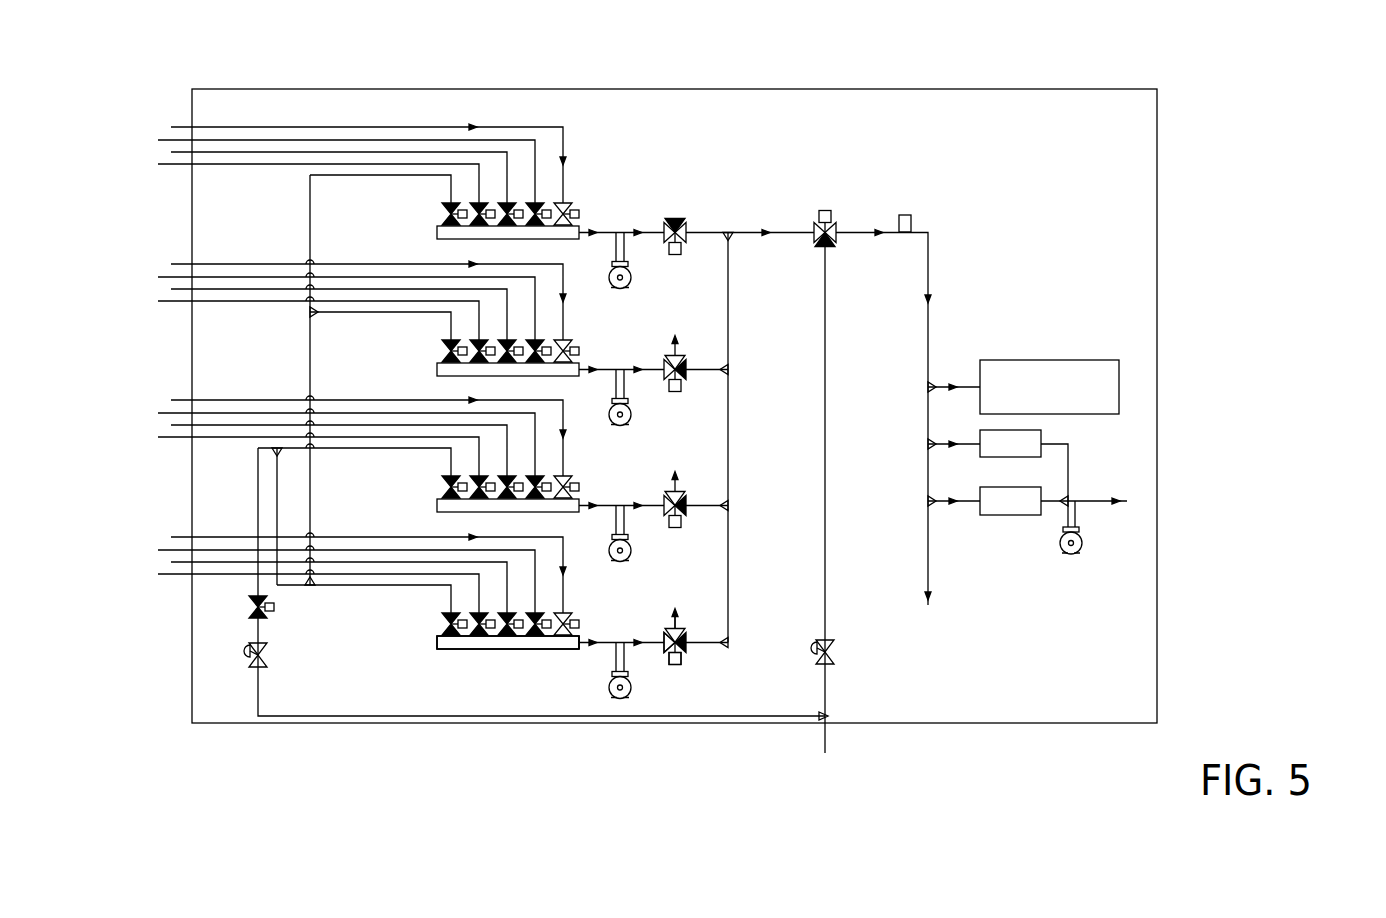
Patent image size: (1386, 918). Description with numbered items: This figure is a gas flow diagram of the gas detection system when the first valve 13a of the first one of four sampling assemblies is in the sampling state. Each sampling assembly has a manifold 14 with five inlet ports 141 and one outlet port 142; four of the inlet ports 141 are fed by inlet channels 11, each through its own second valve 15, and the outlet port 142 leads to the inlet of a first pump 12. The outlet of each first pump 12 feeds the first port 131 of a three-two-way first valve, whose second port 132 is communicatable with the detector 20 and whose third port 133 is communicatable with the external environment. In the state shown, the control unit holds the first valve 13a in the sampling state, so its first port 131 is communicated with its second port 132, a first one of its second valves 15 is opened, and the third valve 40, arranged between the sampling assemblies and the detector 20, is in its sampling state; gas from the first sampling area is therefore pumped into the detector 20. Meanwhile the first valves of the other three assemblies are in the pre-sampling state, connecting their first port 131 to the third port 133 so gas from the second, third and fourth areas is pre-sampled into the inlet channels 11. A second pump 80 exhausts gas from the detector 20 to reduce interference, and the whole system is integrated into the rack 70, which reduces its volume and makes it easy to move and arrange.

The inlet channel 11 is at (366, 127).
The first pump 12 is at (632, 272).
The first valve of first sampling assembly 13a is at (695, 210).
The manifold 14 is at (450, 650).
The inlet port 141 is at (507, 649).
The outlet port 142 is at (580, 650).
The second valve 15 is at (565, 203).
The first port 131 is at (662, 646).
The second port 132 is at (684, 665).
The third port 133 is at (673, 632).
The detector 20 is at (1050, 360).
The third valve 40 is at (850, 213).
The rack 70 is at (1038, 723).
The second pump 80 is at (1083, 540).